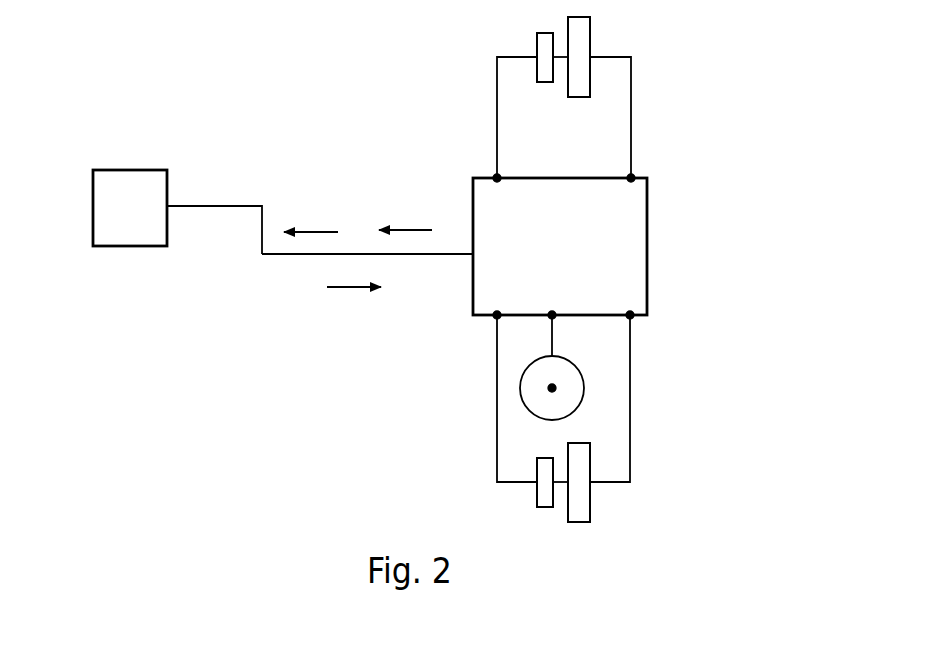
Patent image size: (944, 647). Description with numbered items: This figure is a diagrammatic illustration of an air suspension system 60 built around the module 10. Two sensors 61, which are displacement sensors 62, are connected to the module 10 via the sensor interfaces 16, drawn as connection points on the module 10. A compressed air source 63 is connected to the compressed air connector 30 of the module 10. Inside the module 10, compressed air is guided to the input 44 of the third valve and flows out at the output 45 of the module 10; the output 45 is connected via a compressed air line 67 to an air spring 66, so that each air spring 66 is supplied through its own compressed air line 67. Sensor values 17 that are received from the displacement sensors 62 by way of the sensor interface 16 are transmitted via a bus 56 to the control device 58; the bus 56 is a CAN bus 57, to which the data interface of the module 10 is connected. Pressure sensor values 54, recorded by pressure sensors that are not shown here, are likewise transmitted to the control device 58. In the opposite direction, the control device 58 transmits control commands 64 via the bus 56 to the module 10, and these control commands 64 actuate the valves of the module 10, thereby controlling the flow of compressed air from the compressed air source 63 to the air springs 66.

The module 10 is at (575, 259).
The sensor interface 16 is at (497, 178).
The sensor values 17 is at (318, 231).
The compressed air connector 30 is at (552, 317).
The input 44 is at (631, 178).
The output 45 is at (630, 317).
The pressure sensor values 54 is at (412, 229).
The bus 56 is at (215, 206).
The CAN bus 57 is at (292, 257).
The control device 58 is at (146, 221).
The air suspension system 60 is at (715, 96).
The sensor 61 is at (543, 36).
The displacement sensor 62 is at (546, 72).
The compressed air source 63 is at (584, 388).
The control commands 64 is at (348, 289).
The air spring 66 is at (580, 43).
The compressed air line 67 is at (631, 100).